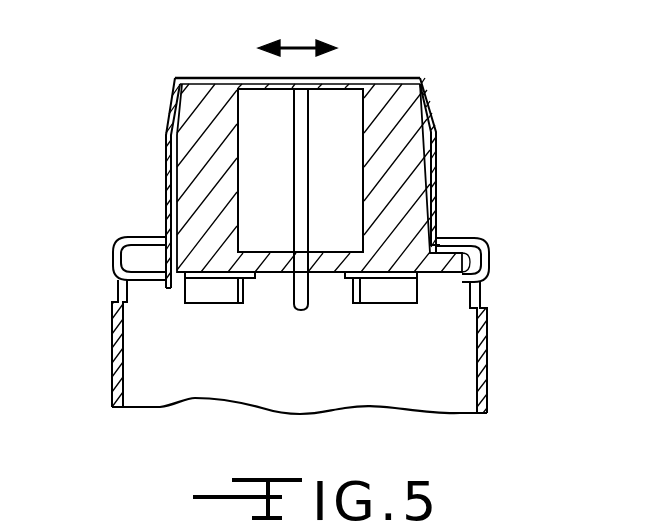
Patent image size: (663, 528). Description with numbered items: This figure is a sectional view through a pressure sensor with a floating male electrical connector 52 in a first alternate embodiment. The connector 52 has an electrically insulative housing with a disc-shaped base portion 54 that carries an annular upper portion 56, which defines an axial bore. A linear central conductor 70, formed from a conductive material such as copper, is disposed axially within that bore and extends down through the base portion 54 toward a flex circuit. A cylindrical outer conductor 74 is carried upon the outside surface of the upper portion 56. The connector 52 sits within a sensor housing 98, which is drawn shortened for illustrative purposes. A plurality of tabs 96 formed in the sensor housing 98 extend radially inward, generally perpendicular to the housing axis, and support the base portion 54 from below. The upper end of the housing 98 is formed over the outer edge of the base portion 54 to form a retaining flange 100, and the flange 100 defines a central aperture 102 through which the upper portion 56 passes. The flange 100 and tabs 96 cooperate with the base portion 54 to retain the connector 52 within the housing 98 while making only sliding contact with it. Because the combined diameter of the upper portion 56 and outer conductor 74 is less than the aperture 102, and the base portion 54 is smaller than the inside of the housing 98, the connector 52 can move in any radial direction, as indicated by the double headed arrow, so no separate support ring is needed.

The floating male electrical connector 52 is at (455, 104).
The base portion 54 is at (150, 262).
The annular upper portion 56 is at (386, 92).
The central conductor 70 is at (312, 122).
The outer conductor 74 is at (438, 163).
The tabs 96 is at (143, 278).
The sensor housing 98 is at (487, 357).
The retaining flange 100 is at (448, 242).
The central aperture 102 is at (164, 240).